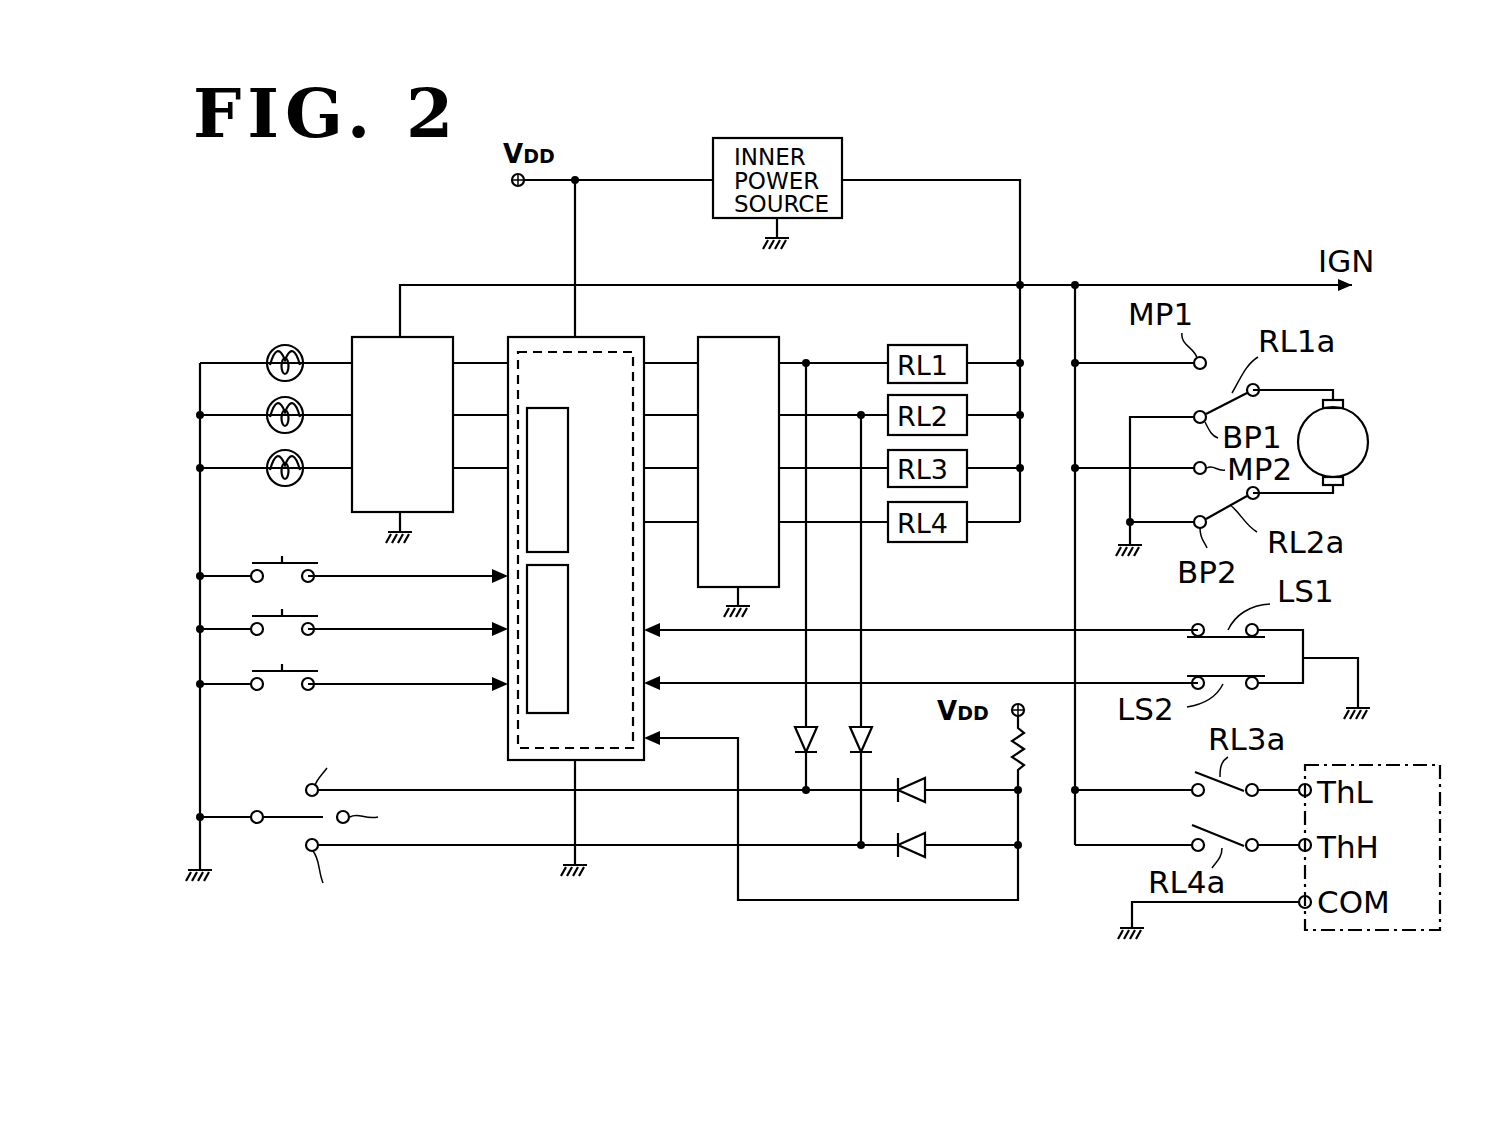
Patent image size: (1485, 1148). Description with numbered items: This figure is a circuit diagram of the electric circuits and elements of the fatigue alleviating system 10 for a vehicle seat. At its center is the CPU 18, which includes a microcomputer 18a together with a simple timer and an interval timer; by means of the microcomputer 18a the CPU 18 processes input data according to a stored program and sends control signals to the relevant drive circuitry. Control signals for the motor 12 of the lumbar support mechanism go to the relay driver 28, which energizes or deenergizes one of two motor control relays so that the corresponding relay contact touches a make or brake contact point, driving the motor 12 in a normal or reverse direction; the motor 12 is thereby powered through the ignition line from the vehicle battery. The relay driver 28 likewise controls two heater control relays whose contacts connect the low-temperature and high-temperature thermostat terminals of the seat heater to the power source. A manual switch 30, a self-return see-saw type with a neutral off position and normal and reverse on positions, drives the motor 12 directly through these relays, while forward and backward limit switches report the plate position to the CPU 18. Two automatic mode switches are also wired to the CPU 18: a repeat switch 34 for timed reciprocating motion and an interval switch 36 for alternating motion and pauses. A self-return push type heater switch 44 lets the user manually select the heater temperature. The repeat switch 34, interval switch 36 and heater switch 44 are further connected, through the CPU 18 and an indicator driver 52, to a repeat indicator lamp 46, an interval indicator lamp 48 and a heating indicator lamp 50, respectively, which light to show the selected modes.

The fatigue alleviating system 10 is at (1247, 162).
The motor 12 is at (1368, 448).
The CPU 18 is at (583, 548).
The microcomputer 18a is at (633, 650).
The relay driver 28 is at (780, 342).
The manual switch 30 is at (297, 815).
The repeat switch 34 is at (314, 615).
The interval switch 36 is at (314, 670).
The heater switch 44 is at (268, 555).
The repeat indicator lamp 46 is at (270, 402).
The interval indicator lamp 48 is at (270, 455).
The heating indicator lamp 50 is at (278, 346).
The indicator driver 52 is at (437, 337).